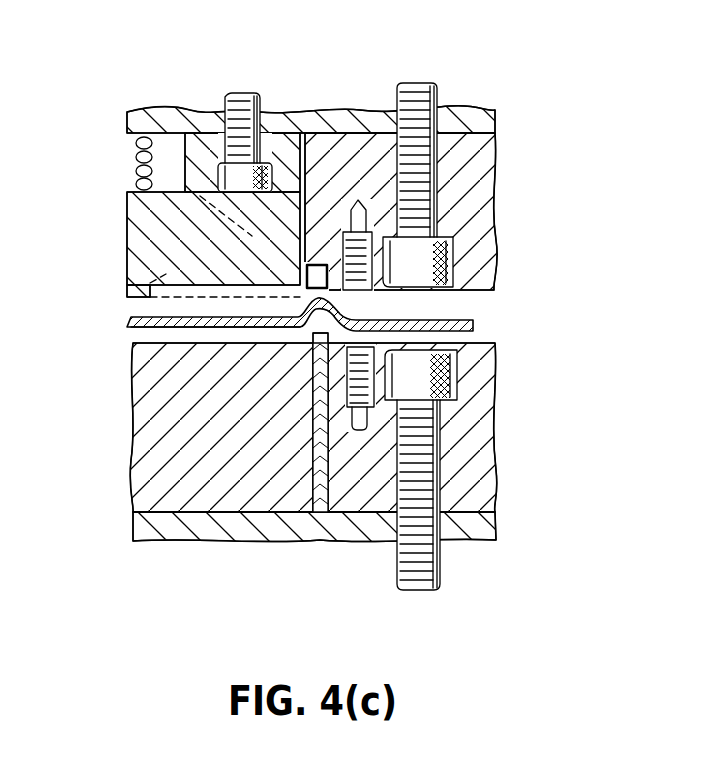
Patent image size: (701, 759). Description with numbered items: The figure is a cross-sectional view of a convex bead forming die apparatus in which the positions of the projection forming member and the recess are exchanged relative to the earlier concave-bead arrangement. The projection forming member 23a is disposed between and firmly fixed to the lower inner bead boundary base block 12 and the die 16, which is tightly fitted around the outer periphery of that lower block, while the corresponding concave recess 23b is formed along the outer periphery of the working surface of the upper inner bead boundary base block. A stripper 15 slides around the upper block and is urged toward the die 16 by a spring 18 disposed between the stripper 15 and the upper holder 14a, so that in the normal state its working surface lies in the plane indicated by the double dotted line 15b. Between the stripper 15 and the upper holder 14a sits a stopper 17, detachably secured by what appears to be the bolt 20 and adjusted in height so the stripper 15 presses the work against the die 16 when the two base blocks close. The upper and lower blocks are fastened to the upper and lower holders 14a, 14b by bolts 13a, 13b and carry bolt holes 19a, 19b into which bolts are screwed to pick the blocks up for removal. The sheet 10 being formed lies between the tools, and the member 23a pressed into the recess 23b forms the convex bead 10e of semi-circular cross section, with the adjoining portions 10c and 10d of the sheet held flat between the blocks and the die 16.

The metal sheet / workpiece 10 is at (127, 322).
The lower bent portion of sheet 10c is at (312, 350).
The flat portion of sheet 10d is at (198, 327).
The convex bead 10e is at (305, 287).
The lower inner bead boundary base block 12 is at (495, 372).
The bolt 13a is at (490, 205).
The bolt 13b is at (485, 430).
The upper holder 14a is at (492, 108).
The lower holder 14b is at (493, 532).
The stripper 15 is at (145, 236).
The double dotted line 15b is at (160, 283).
The die 16 is at (148, 464).
The stopper 17 is at (266, 165).
The spring 18 is at (165, 135).
The bolt hole 19a is at (380, 180).
The bolt hole 19b is at (360, 430).
The screw 20 is at (237, 90).
The projection forming member 23a is at (313, 450).
The concave recess 23b is at (352, 205).